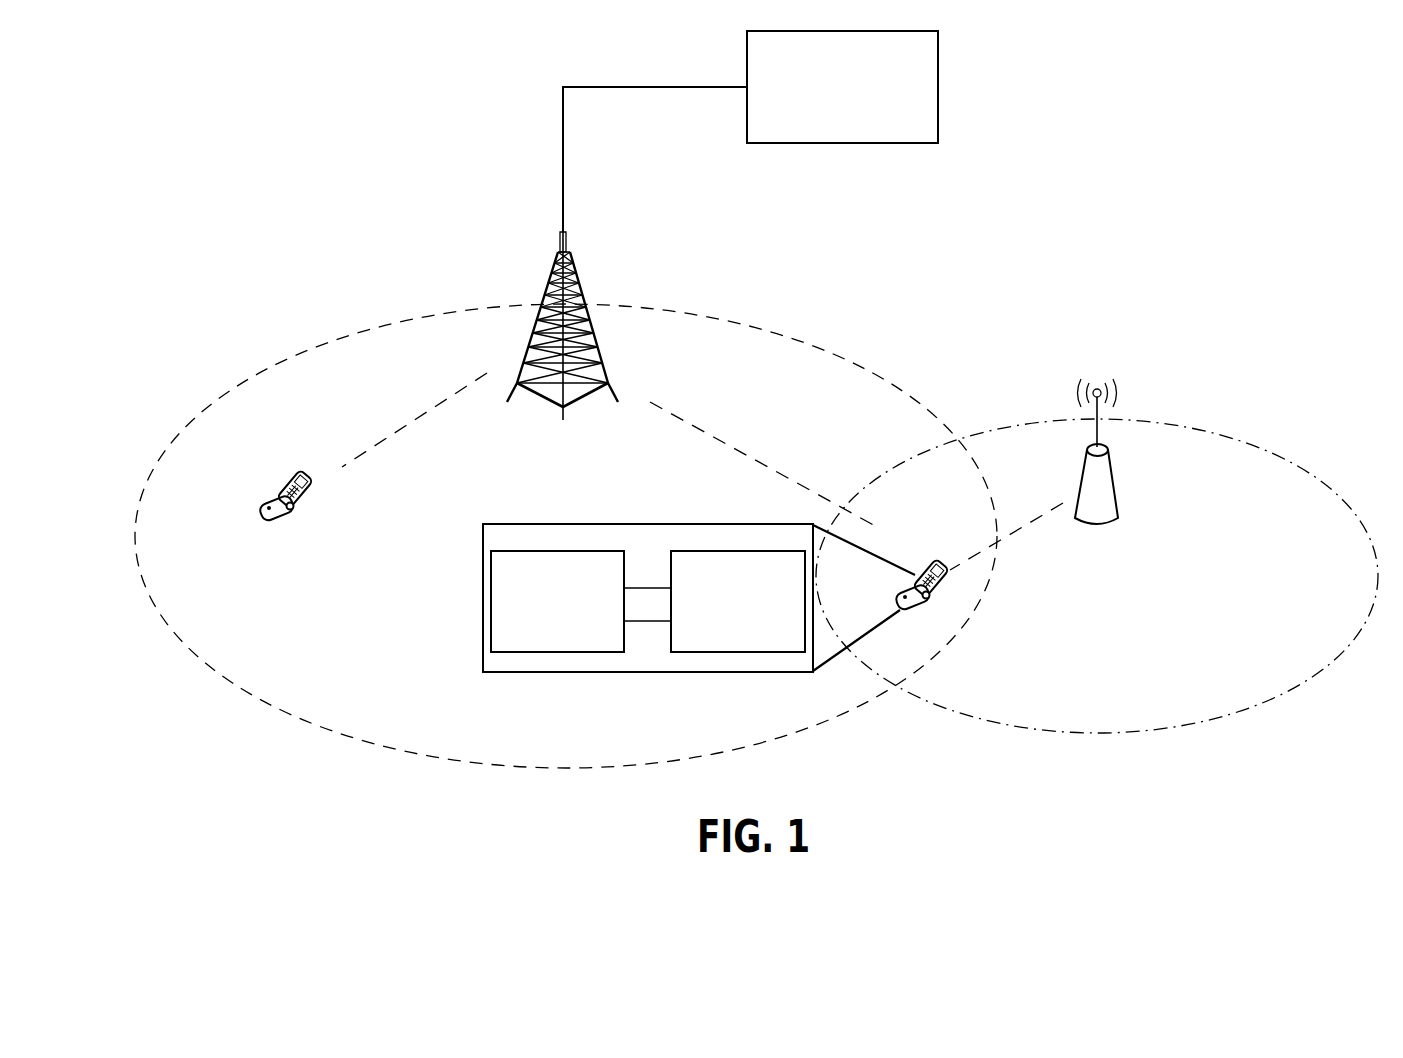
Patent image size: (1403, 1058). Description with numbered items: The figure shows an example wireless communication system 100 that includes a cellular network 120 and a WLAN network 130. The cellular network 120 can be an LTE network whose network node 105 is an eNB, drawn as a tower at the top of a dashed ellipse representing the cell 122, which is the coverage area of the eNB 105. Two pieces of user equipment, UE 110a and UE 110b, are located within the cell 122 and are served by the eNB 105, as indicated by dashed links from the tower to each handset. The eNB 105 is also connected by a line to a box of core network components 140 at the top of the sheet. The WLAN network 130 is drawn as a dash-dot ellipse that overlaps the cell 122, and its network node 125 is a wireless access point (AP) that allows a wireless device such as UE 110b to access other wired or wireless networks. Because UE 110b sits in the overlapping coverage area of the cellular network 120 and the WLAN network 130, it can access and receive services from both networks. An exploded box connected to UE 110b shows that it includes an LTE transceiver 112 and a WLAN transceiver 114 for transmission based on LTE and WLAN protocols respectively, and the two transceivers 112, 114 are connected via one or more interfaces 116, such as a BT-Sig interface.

The wireless communication system 100 is at (305, 112).
The network node 105 is at (583, 253).
The user equipment 110a is at (278, 484).
The user equipment 110b is at (716, 595).
The LTE transceiver 112 is at (558, 551).
The WLAN transceiver 114 is at (686, 551).
The interfaces 116 is at (657, 588).
The cellular network 120 is at (267, 657).
The cell 122 is at (315, 723).
The network node 125 is at (1108, 452).
The WLAN network 130 is at (1262, 680).
The core network components 140 is at (938, 86).